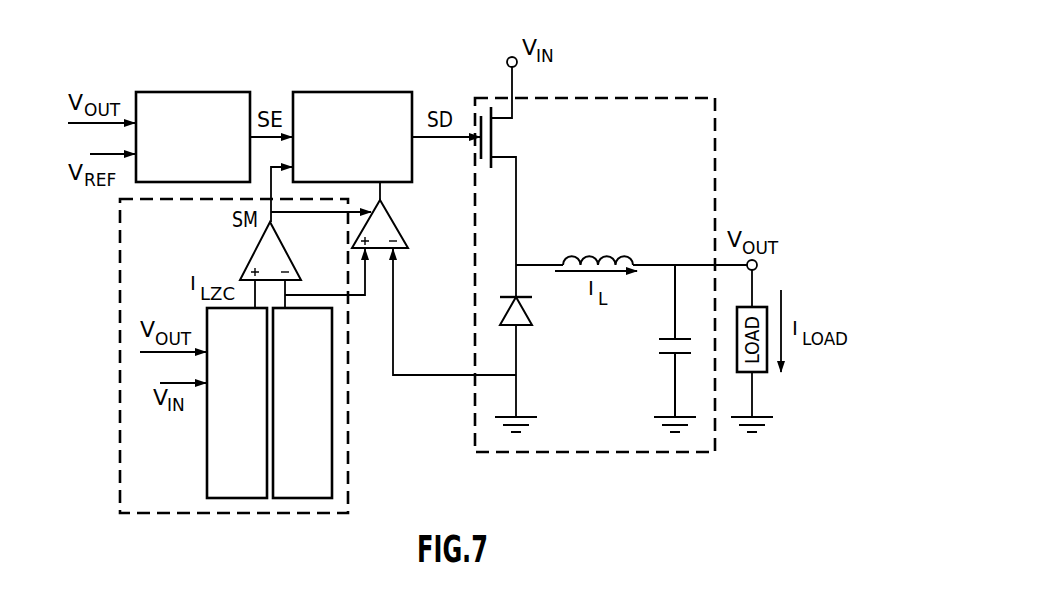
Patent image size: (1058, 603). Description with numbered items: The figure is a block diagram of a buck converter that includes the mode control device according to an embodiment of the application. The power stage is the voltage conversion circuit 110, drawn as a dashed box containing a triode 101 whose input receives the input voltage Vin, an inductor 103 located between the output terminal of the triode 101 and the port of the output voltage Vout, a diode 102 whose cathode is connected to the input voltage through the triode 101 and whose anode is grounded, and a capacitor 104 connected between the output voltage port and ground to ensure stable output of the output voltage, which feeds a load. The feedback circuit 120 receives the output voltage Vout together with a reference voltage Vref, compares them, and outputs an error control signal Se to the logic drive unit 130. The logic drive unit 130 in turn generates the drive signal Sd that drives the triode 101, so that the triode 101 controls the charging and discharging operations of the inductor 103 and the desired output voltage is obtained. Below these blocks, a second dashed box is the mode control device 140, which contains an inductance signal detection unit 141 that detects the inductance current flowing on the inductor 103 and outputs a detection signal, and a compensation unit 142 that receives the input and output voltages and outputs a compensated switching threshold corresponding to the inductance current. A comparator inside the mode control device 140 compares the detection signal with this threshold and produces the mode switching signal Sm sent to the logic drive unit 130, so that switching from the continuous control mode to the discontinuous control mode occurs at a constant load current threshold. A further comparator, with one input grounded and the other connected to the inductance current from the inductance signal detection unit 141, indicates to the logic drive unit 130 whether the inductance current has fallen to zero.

The triode 101 is at (495, 146).
The diode 102 is at (523, 325).
The inductor 103 is at (624, 253).
The capacitor 104 is at (672, 353).
The voltage conversion circuit 110 is at (588, 98).
The feedback circuit 120 is at (193, 92).
The logic drive unit 130 is at (353, 92).
The mode control device 140 is at (192, 513).
The inductance signal detection unit 141 is at (305, 498).
The compensation unit 142 is at (242, 498).